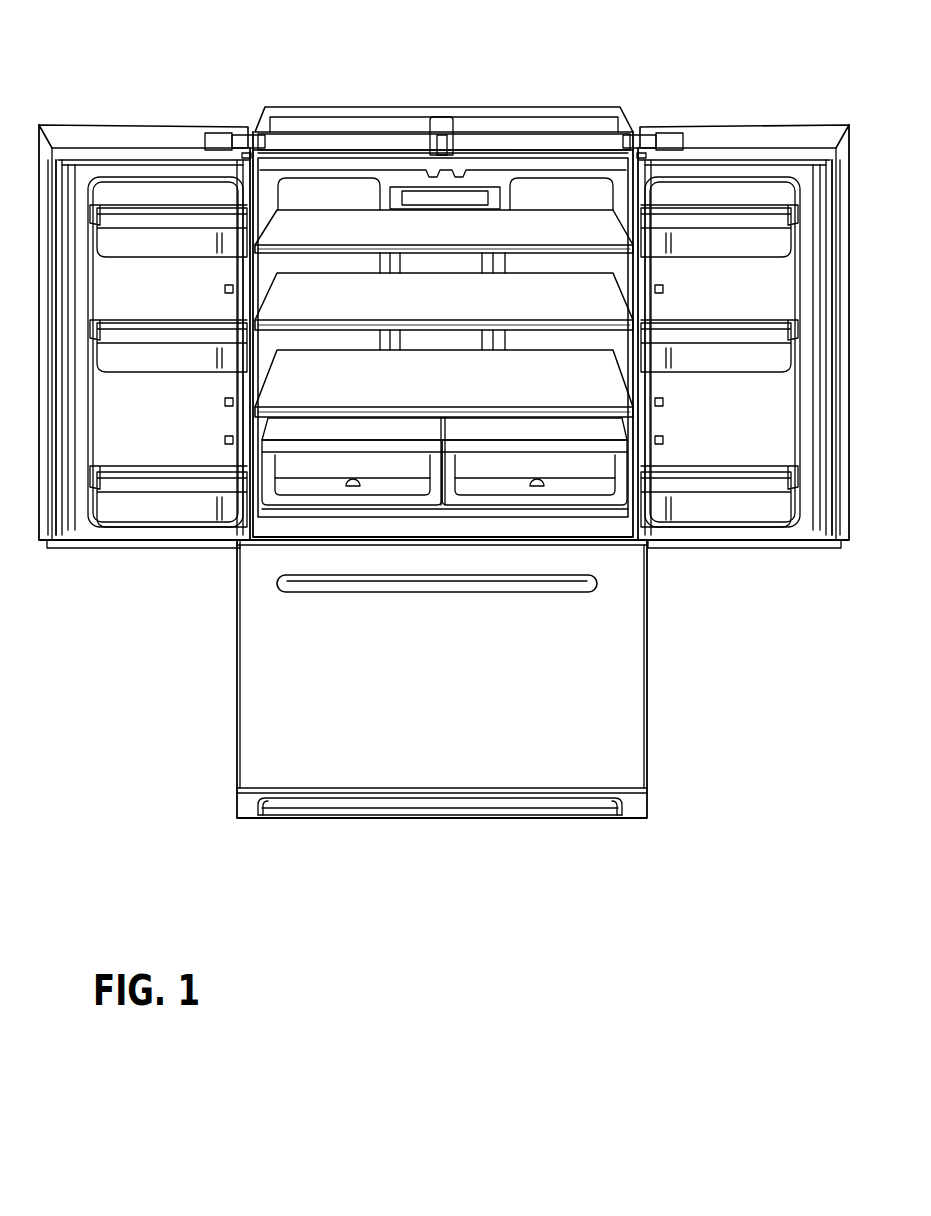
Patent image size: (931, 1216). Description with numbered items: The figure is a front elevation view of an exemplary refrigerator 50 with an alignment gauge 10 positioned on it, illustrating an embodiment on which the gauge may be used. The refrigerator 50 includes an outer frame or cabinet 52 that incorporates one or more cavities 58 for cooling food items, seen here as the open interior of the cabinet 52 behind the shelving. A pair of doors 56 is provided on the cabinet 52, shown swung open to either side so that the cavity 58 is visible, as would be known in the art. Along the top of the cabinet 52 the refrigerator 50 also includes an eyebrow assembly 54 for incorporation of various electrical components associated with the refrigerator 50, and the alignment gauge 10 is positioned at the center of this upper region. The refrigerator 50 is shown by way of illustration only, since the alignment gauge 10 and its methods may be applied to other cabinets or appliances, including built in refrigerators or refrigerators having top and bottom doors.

The refrigerator 50 is at (444, 413).
The cabinet 52 is at (481, 418).
The eyebrow assembly 54 is at (517, 130).
The alignment gauge 10 is at (443, 120).
The doors 56 is at (160, 125).
The cavity 58 is at (493, 382).